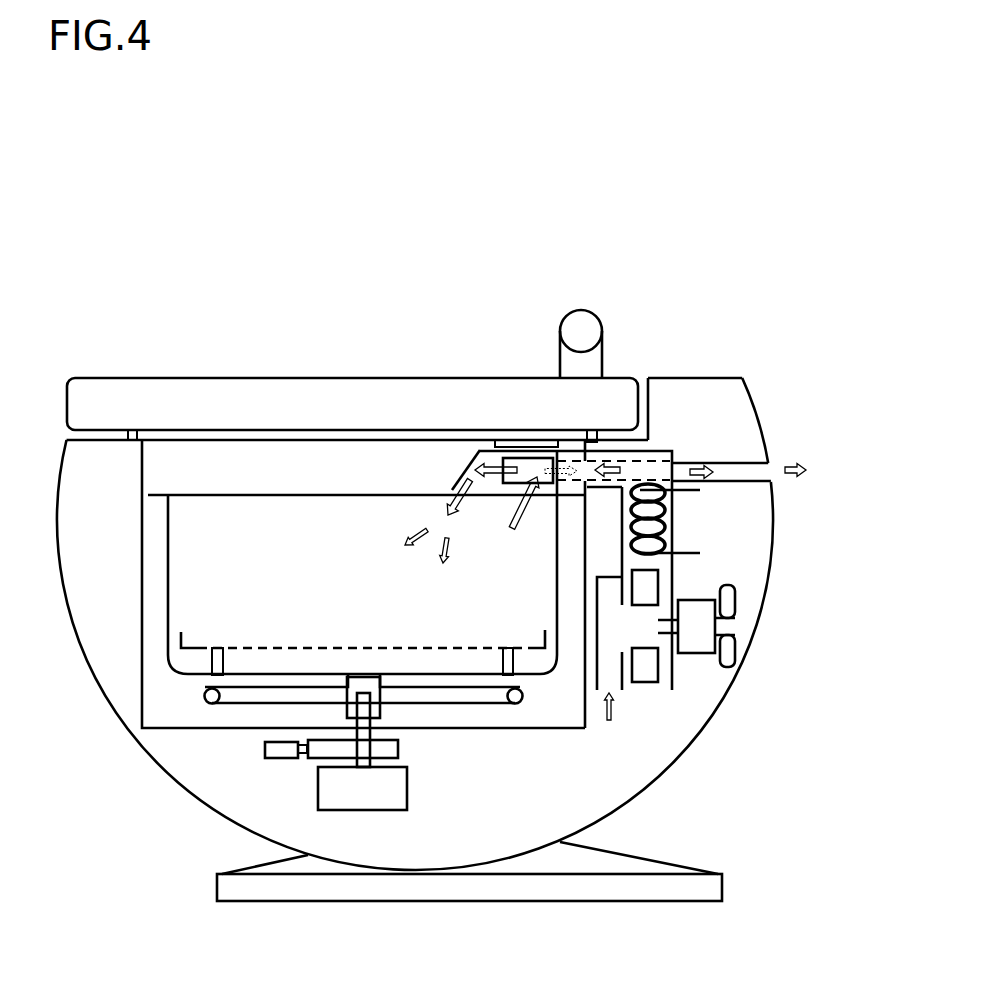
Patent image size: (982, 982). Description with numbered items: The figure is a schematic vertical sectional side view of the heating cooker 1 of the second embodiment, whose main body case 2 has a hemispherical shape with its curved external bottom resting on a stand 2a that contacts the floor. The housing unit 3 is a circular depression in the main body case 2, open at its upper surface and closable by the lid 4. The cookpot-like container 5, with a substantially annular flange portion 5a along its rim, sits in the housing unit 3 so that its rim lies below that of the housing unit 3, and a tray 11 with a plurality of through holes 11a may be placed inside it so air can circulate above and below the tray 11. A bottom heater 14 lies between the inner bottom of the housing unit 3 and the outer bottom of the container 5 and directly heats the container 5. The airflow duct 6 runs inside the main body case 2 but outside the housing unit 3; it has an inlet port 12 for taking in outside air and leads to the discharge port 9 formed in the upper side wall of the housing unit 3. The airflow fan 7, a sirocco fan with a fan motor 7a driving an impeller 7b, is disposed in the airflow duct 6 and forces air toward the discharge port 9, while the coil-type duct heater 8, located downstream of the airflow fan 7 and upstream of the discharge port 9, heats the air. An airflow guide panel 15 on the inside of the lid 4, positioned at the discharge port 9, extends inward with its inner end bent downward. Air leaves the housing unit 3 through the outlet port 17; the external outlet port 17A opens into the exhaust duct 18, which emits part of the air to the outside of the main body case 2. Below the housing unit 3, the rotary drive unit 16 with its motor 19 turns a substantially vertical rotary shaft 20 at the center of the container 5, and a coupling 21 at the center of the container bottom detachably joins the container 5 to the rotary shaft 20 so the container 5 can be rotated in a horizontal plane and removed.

The heating cooker 1 is at (800, 237).
The main body case 2 is at (93, 675).
The stand 2a is at (540, 904).
The housing unit 3 is at (140, 715).
The lid 4 is at (262, 376).
The container 5 is at (168, 627).
The flange portion 5a is at (157, 492).
The airflow duct 6 is at (660, 450).
The airflow fan 7 is at (742, 615).
The fan motor 7a is at (693, 653).
The impeller 7b is at (658, 668).
The duct heater 8 is at (667, 523).
The discharge port 9 is at (588, 468).
The tray 11 is at (362, 645).
The through holes 11a is at (290, 648).
The inlet port 12 is at (613, 690).
The bottom heater 14 is at (223, 707).
The airflow guide panel 15 is at (467, 465).
The rotary drive unit 16 is at (303, 797).
The outlet port 17 is at (530, 457).
The external outlet port 17A is at (512, 374).
The exhaust duct 18 is at (740, 472).
The motor 19 is at (318, 775).
The rotary shaft 20 is at (367, 760).
The coupling 21 is at (383, 715).